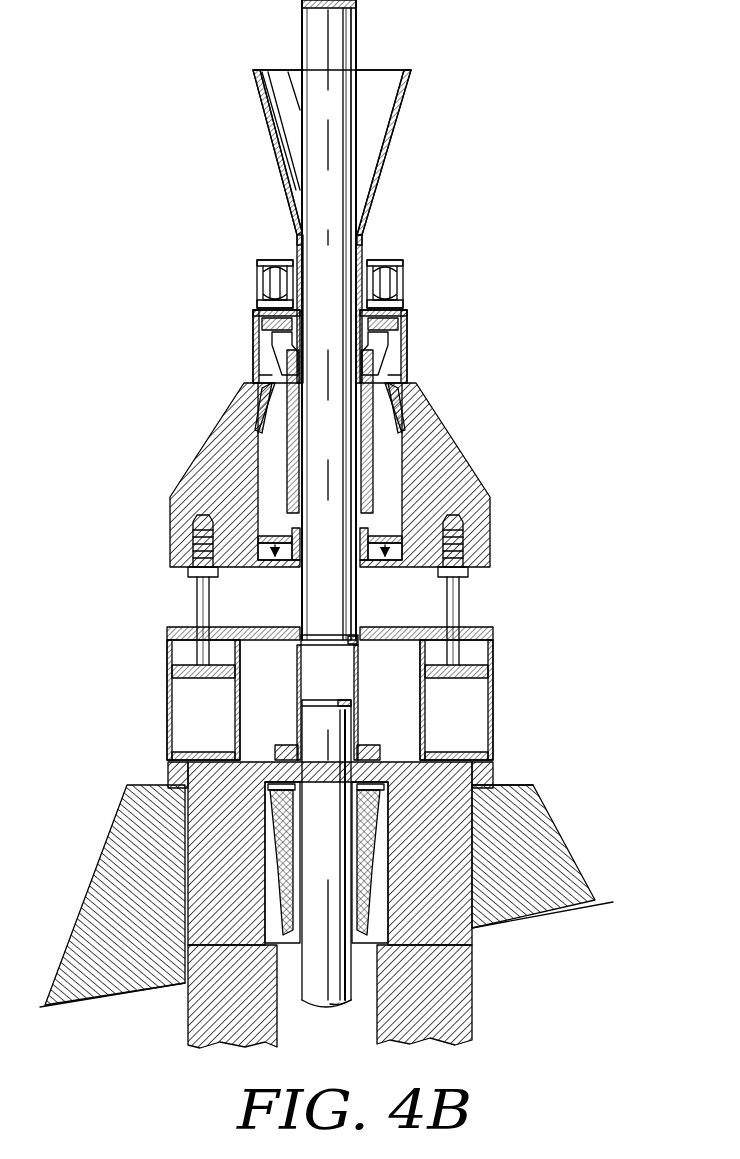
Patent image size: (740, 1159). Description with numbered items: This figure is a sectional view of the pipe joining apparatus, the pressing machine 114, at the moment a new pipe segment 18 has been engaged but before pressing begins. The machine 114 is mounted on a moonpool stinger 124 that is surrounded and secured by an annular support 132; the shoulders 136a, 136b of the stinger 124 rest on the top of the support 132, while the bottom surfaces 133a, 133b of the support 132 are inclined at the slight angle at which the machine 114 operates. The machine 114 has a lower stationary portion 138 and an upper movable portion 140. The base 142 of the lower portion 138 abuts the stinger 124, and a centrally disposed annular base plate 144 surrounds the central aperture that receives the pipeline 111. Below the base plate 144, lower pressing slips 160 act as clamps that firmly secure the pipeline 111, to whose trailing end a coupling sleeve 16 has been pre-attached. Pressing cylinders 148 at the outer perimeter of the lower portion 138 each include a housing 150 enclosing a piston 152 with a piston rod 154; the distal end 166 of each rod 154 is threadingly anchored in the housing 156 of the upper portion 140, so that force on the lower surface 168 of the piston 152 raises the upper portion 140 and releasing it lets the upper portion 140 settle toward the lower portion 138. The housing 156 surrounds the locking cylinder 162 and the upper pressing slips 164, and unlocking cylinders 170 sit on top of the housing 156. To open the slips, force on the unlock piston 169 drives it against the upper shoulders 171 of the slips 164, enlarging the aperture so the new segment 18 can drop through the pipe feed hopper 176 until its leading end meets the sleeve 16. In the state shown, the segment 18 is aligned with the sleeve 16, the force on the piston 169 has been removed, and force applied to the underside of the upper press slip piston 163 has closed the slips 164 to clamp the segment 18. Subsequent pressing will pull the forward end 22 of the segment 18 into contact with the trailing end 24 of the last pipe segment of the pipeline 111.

The pipe segment 18 is at (345, 30).
The pressing machine 114 is at (500, 128).
The pipe feed hopper 176 is at (395, 140).
The unlock piston 169 is at (388, 270).
The unlocking cylinder 170 is at (253, 279).
The upper shoulder 171 is at (262, 337).
The upper pressing slips 164 is at (287, 405).
The housing 156 is at (435, 425).
The upper press slip piston 163 is at (390, 528).
The upper portion 140 is at (375, 475).
The locking cylinder 162 is at (275, 535).
The distal end 166 is at (455, 555).
The piston rod 154 is at (208, 598).
The forward end 22 is at (358, 640).
The housing 150 is at (167, 650).
The piston 152 is at (192, 675).
The coupling sleeve 16 is at (360, 675).
The trailing end 24 is at (308, 700).
The pressing cylinder 148 is at (165, 713).
The lower surface 168 is at (470, 678).
The pipeline 111 is at (312, 722).
The base plate 144 is at (372, 745).
The base 142 is at (195, 752).
The shoulder 136a is at (185, 775).
The shoulder 136b is at (478, 780).
The lower portion 138 is at (545, 797).
The support 132 is at (130, 842).
The bottom surface 133a is at (143, 996).
The bottom surface 133b is at (550, 915).
The lower pressing slips 160 is at (393, 925).
The moonpool stinger 124 is at (458, 1012).